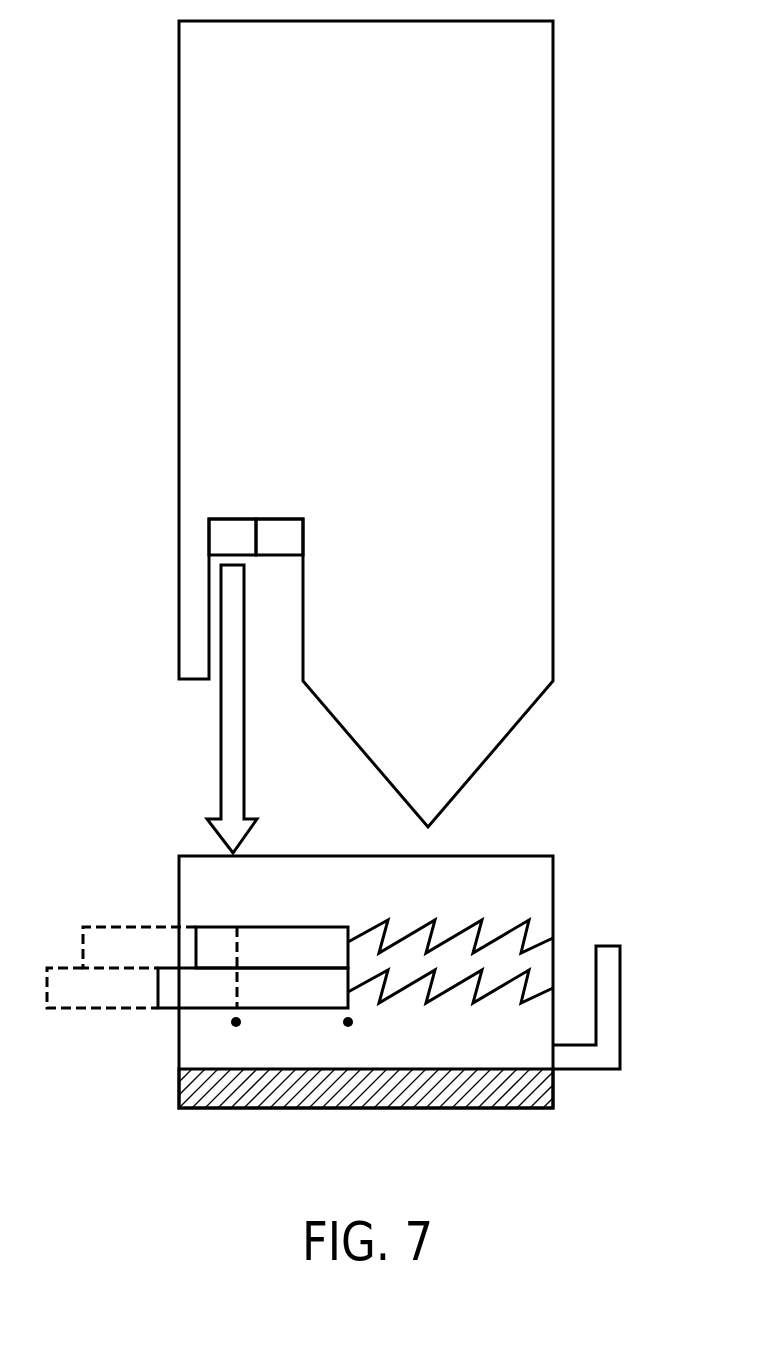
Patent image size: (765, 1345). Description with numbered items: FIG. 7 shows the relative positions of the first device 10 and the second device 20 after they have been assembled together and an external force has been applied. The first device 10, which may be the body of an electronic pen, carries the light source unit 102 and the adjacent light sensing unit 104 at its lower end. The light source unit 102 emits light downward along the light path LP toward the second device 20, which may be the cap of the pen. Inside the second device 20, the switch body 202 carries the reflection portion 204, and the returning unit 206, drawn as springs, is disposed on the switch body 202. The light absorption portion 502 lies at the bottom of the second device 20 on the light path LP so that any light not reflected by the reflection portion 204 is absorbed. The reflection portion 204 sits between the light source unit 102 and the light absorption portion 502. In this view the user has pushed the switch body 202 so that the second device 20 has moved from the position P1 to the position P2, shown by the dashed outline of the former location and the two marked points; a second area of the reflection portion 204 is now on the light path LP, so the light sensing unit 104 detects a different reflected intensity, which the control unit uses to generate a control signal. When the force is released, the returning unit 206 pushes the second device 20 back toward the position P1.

The first device 10 is at (554, 158).
The light source unit 102 is at (229, 517).
The light sensing unit 104 is at (282, 517).
The light path LP is at (227, 728).
The second device 20 is at (508, 855).
The switch body 202 is at (176, 988).
The reflection portion 204 is at (217, 932).
The returning unit 206 is at (528, 920).
The light absorption portion 502 is at (198, 1089).
The position P1 is at (236, 1042).
The position P2 is at (348, 1042).